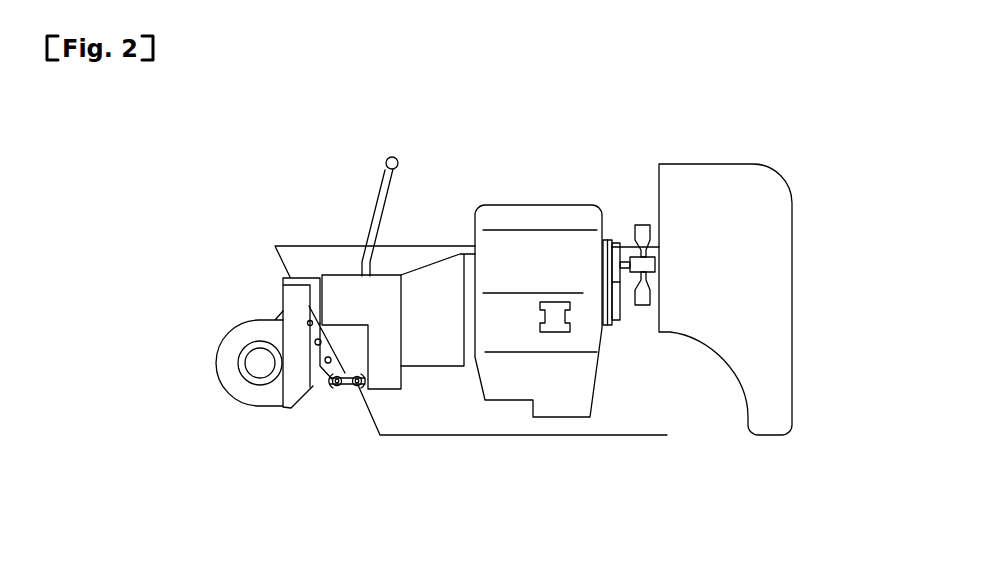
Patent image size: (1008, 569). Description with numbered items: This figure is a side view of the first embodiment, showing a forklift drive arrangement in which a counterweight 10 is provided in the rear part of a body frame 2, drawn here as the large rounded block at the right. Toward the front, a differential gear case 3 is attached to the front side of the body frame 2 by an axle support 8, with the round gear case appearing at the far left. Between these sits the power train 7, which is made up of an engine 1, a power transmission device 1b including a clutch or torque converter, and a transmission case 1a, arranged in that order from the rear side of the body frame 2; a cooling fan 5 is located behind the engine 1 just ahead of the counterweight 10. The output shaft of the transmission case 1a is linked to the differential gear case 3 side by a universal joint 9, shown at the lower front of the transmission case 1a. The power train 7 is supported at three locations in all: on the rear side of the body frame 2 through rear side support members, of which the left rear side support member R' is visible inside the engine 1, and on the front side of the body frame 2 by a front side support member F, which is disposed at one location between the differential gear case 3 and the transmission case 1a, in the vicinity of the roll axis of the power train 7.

The engine 1 is at (485, 229).
The transmission case 1a is at (347, 275).
The power transmission device 1b is at (425, 262).
The body frame 2 is at (622, 413).
The differential gear case 3 is at (247, 333).
The cooling fan 5 is at (634, 226).
The power train 7 is at (505, 420).
The axle support 8 is at (346, 340).
The universal joint 9 is at (341, 390).
The counterweight 10 is at (758, 198).
The rear side support member (left) R' is at (555, 247).
The front side support member F is at (297, 302).